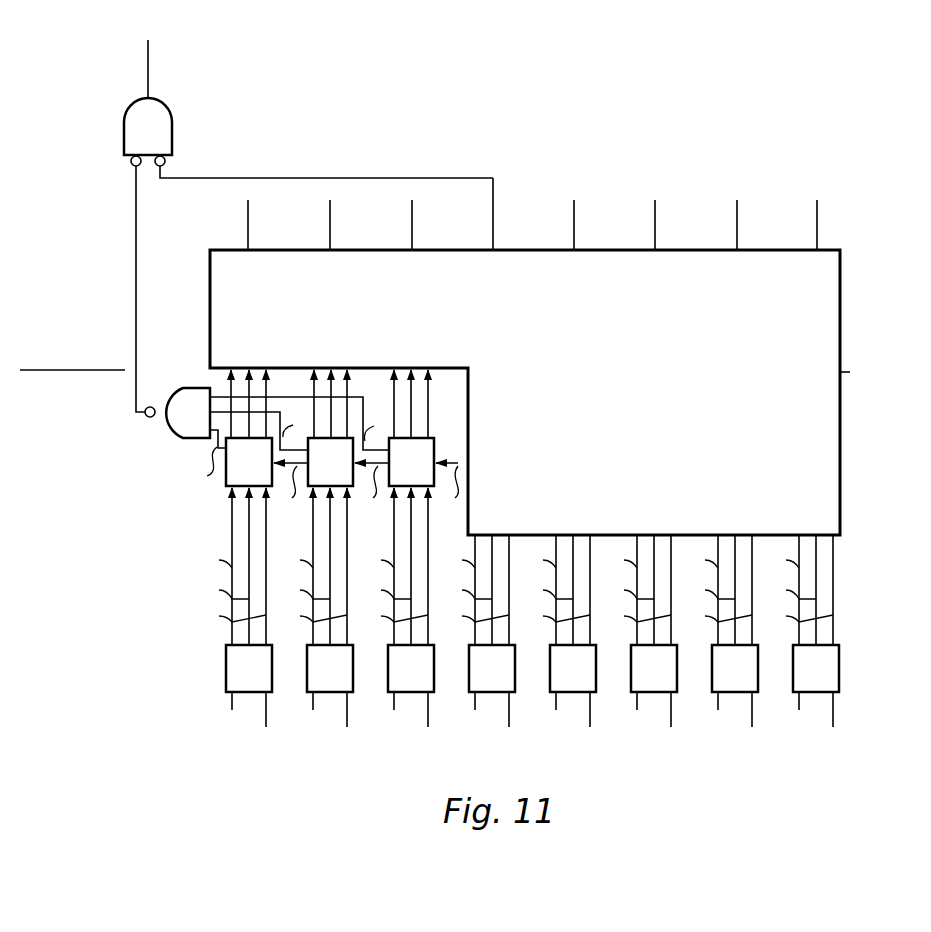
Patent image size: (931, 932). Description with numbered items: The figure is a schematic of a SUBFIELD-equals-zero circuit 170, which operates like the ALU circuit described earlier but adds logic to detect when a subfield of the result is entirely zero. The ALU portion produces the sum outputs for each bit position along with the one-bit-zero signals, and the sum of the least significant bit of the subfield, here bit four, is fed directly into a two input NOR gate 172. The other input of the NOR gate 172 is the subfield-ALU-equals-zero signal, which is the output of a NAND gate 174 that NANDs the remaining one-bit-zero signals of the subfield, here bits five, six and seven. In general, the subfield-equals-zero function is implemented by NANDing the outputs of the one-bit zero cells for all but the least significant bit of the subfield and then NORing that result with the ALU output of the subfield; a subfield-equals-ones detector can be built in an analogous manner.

The SUBFIELD=0 circuit 170 is at (82, 238).
The two input NOR gate 172 is at (166, 124).
The NAND gate 174 is at (182, 428).